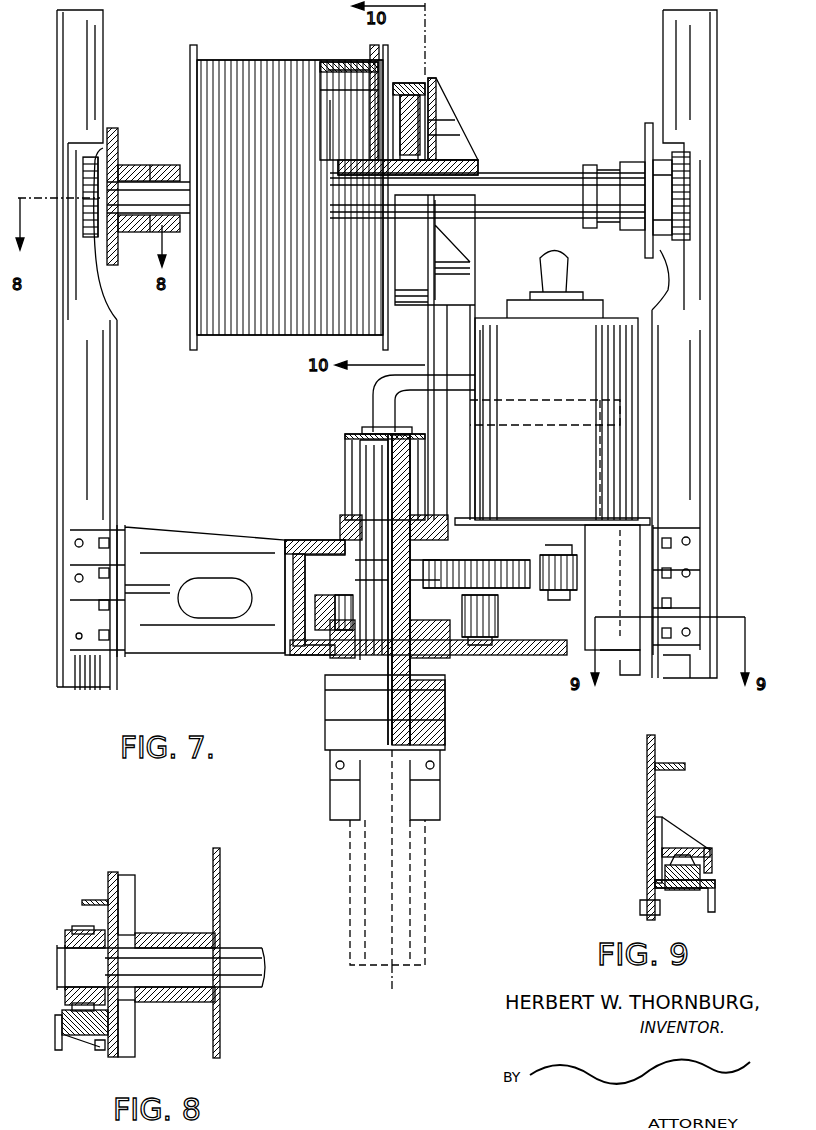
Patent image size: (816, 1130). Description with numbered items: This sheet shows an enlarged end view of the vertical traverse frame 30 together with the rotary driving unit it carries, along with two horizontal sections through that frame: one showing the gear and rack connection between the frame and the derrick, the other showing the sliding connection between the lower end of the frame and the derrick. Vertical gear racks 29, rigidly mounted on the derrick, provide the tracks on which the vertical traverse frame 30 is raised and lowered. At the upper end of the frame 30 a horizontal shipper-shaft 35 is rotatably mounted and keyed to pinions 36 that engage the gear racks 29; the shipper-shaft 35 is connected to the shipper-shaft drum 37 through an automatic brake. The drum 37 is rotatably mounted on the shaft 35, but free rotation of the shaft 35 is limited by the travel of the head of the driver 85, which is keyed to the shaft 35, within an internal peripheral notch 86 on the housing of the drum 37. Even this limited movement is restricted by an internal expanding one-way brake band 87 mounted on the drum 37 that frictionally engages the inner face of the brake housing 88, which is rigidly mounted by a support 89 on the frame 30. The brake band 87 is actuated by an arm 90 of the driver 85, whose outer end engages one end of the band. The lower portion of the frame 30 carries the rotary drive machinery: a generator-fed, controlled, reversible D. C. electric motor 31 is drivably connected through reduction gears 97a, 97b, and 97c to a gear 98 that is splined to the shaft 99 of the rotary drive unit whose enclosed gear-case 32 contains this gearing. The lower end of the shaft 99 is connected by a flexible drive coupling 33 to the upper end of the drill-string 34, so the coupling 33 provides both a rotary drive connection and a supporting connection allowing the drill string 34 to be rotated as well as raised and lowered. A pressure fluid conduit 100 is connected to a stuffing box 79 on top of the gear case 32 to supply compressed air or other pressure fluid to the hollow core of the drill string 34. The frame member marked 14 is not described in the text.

In FIG. 7, the frame post 14 is at (87, 45).
In FIG. 8, the frame post 14 is at (55, 1040).
In FIG. 9, the frame post 14 is at (715, 895).
In FIG. 8, the vertical gear rack 29 is at (62, 1012).
In FIG. 9, the vertical gear rack 29 is at (685, 865).
In FIG. 7, the vertical traverse frame 30 is at (90, 425).
In FIG. 8, the vertical traverse frame 30 is at (97, 900).
In FIG. 9, the vertical traverse frame 30 is at (657, 790).
In FIG. 7, the electric motor 31 is at (495, 330).
In FIG. 7, the gear-case 32 is at (345, 452).
In FIG. 7, the drive coupling 33 is at (445, 710).
In FIG. 7, the drill-string 34 is at (410, 912).
In FIG. 7, the shipper-shaft 35 is at (520, 190).
In FIG. 8, the shipper-shaft 35 is at (158, 960).
In FIG. 7, the pinion 36 is at (92, 157).
In FIG. 8, the pinion 36 is at (80, 930).
In FIG. 7, the shipper-shaft drum 37 is at (268, 85).
In FIG. 8, the shipper-shaft drum 37 is at (213, 853).
In FIG. 7, the stuffing box 79 is at (368, 428).
In FIG. 7, the driver 85 is at (390, 80).
In FIG. 7, the internal peripheral notch 86 is at (378, 70).
In FIG. 7, the one-way brake band 87 is at (410, 85).
In FIG. 7, the brake housing 88 is at (455, 128).
In FIG. 7, the support 89 is at (425, 335).
In FIG. 7, the arm 90 is at (420, 118).
In FIG. 7, the reduction gear 97a is at (575, 555).
In FIG. 7, the reduction gear 97b is at (525, 560).
In FIG. 7, the reduction gear 97c is at (500, 628).
In FIG. 7, the gear 98 is at (310, 600).
In FIG. 7, the shaft 99 is at (372, 520).
In FIG. 7, the pressure fluid conduit 100 is at (385, 383).